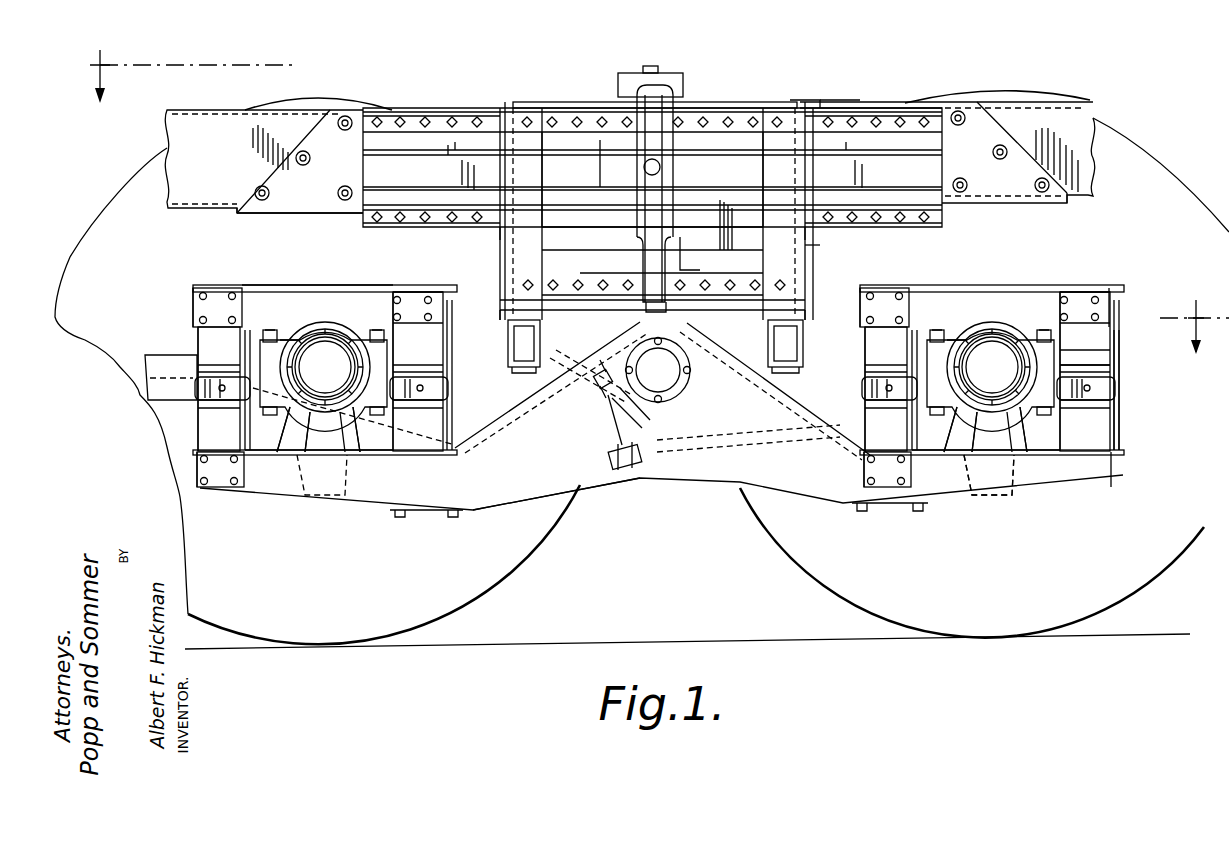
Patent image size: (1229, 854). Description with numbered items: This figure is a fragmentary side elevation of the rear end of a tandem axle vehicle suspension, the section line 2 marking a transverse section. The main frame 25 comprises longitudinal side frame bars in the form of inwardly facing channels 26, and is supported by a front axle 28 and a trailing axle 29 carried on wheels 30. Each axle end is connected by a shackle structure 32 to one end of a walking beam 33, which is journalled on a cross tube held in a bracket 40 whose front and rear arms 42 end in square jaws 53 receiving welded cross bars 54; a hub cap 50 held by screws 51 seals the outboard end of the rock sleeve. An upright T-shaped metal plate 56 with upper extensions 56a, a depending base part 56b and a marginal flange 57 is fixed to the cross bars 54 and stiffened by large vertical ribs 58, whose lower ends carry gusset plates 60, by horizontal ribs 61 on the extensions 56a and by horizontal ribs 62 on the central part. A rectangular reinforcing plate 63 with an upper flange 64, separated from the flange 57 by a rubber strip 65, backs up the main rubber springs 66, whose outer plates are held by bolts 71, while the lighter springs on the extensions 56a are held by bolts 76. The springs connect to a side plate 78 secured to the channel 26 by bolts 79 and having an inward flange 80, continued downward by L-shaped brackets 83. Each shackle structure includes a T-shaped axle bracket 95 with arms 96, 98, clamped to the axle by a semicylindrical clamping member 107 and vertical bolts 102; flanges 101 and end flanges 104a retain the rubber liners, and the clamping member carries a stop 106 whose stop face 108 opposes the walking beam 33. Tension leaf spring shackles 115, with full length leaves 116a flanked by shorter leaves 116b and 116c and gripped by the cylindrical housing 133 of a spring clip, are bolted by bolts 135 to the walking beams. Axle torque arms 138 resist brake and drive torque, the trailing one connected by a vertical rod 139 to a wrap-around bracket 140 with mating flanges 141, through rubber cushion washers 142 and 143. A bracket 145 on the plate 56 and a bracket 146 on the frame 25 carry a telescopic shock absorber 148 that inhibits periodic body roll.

The section line 2- 2 is at (654, 197).
The main frame 25 is at (1084, 96).
The side frame bars 26 is at (1093, 148).
The front axle 28 is at (342, 368).
The trailing axle 29 is at (1009, 370).
The wheels 30 is at (480, 607).
The shackle structure 32 is at (165, 297).
The walking beam 33 is at (519, 512).
The bracket 40 is at (540, 376).
The arms 42 is at (749, 394).
The hub cap 50 is at (677, 379).
The screws 51 is at (677, 359).
The square jaws 53 is at (506, 318).
The cross bars 54 is at (507, 342).
The upright metal plate 56 is at (585, 163).
The upper extensions 56a is at (383, 175).
The depending base part 56b is at (607, 234).
The marginal flange 57 is at (478, 109).
The vertical ribs 58 is at (542, 180).
The gusset plates 60 is at (501, 244).
The horizontal ribs 61 is at (471, 160).
The horizontal ribs 62 is at (597, 197).
The reinforcing plate 63 is at (711, 96).
The upper flange 64 is at (758, 102).
The strip of rubber 65 is at (795, 100).
The main rubber springs 66 is at (508, 130).
The bolts 71 is at (554, 111).
The bolts 76 is at (405, 119).
The side plate 78 is at (340, 106).
The bolts 79 is at (267, 176).
The flange 80 is at (281, 213).
The L-shaped brackets 83 is at (822, 248).
The axle bracket 95 is at (351, 284).
The arm 96 is at (256, 286).
The arm 98 is at (438, 286).
The flanges 101 is at (328, 334).
The bolts 102 is at (271, 330).
The end flanges 104a is at (322, 450).
The stop 106 is at (361, 494).
The clamping member 107 is at (288, 452).
The stop face 108 is at (376, 452).
The leaf spring shackles 115 is at (205, 284).
The full length spring leaves 116a is at (1118, 365).
The spring leaves 116b is at (1116, 347).
The spring leaves 116c is at (1121, 333).
The cylindrical housing 133 is at (192, 385).
The bolts 135 is at (224, 287).
The axle torque arms 138 is at (145, 363).
The rod 139 is at (609, 431).
The attachment bracket 140 is at (600, 399).
The end flanges 141 is at (597, 374).
The rubber cushion washers 142 is at (611, 463).
The cushion washers 143 is at (598, 341).
The bracket 145 is at (684, 248).
The bracket 146 is at (667, 72).
The shock absorber 148 is at (662, 168).